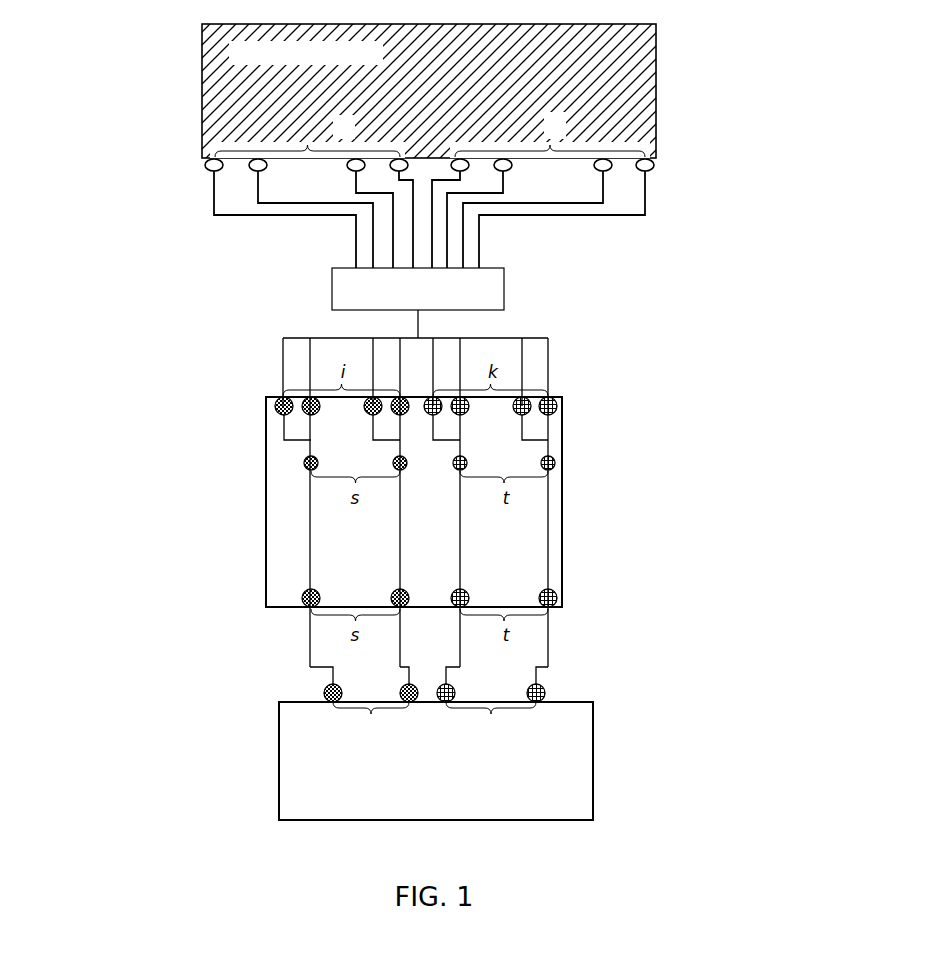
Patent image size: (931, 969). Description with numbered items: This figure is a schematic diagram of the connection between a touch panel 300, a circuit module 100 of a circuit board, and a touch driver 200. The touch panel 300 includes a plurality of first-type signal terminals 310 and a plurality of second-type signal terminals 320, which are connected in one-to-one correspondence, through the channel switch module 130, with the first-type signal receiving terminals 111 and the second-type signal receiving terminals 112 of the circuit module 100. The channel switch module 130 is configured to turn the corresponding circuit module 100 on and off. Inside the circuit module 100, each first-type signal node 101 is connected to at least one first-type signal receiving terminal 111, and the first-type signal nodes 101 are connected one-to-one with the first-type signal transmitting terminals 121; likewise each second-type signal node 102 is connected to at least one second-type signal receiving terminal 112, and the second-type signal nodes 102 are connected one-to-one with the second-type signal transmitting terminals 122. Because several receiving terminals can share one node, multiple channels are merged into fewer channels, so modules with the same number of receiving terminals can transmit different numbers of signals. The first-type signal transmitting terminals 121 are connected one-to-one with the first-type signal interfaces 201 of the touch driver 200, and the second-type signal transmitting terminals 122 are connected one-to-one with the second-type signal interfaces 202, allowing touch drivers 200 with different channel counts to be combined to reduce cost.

The touch panel 300 is at (429, 91).
The first-type signal terminals 310 is at (208, 164).
The second-type signal terminals 320 is at (652, 163).
The channel switch module 130 is at (418, 289).
The circuit module 100 is at (178, 283).
The first-type signal receiving terminals 111 is at (280, 405).
The second-type signal receiving terminals 112 is at (560, 405).
The first-type signal nodes 101 is at (306, 462).
The second-type signal nodes 102 is at (556, 463).
The first-type signal transmitting terminals 121 is at (304, 595).
The second-type signal transmitting terminals 122 is at (557, 598).
The second-type signal interfaces 202 is at (324, 694).
The first-type signal interfaces 201 is at (545, 691).
The touch driver 200 is at (436, 761).